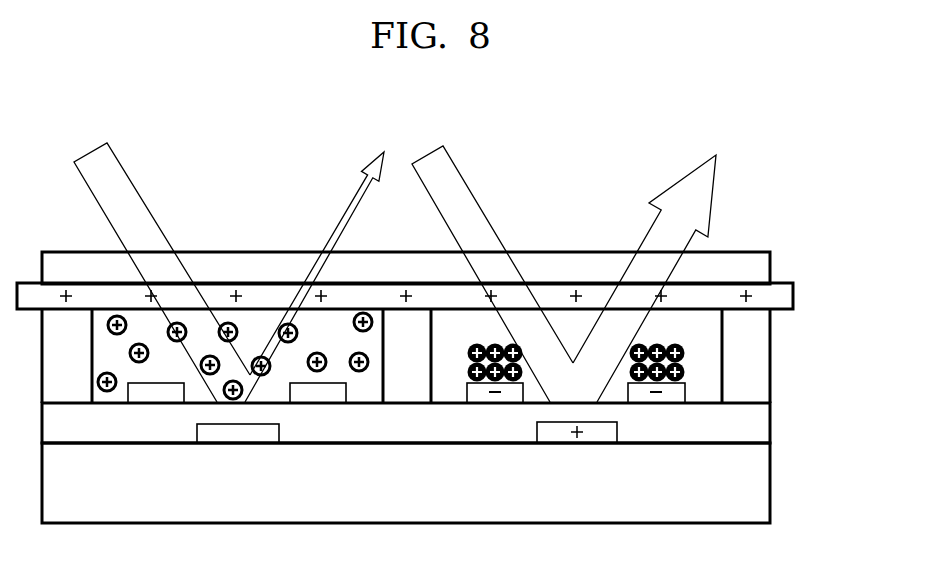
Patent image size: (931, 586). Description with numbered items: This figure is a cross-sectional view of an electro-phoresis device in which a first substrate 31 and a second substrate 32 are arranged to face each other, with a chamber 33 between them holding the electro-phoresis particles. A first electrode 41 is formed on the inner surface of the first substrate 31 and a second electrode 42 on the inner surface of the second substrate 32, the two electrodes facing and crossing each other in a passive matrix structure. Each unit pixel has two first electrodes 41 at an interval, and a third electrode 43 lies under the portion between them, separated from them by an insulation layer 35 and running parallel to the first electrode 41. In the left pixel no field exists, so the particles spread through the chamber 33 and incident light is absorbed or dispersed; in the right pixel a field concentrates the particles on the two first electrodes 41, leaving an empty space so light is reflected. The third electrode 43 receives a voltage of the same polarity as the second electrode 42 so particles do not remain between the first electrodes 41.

The first substrate 31 is at (772, 482).
The second substrate 32 is at (772, 264).
The chamber 33 is at (712, 349).
The insulation layer 35 is at (772, 420).
The first electrode 41 is at (686, 392).
The second electrode 42 is at (795, 293).
The third electrode 43 is at (598, 438).